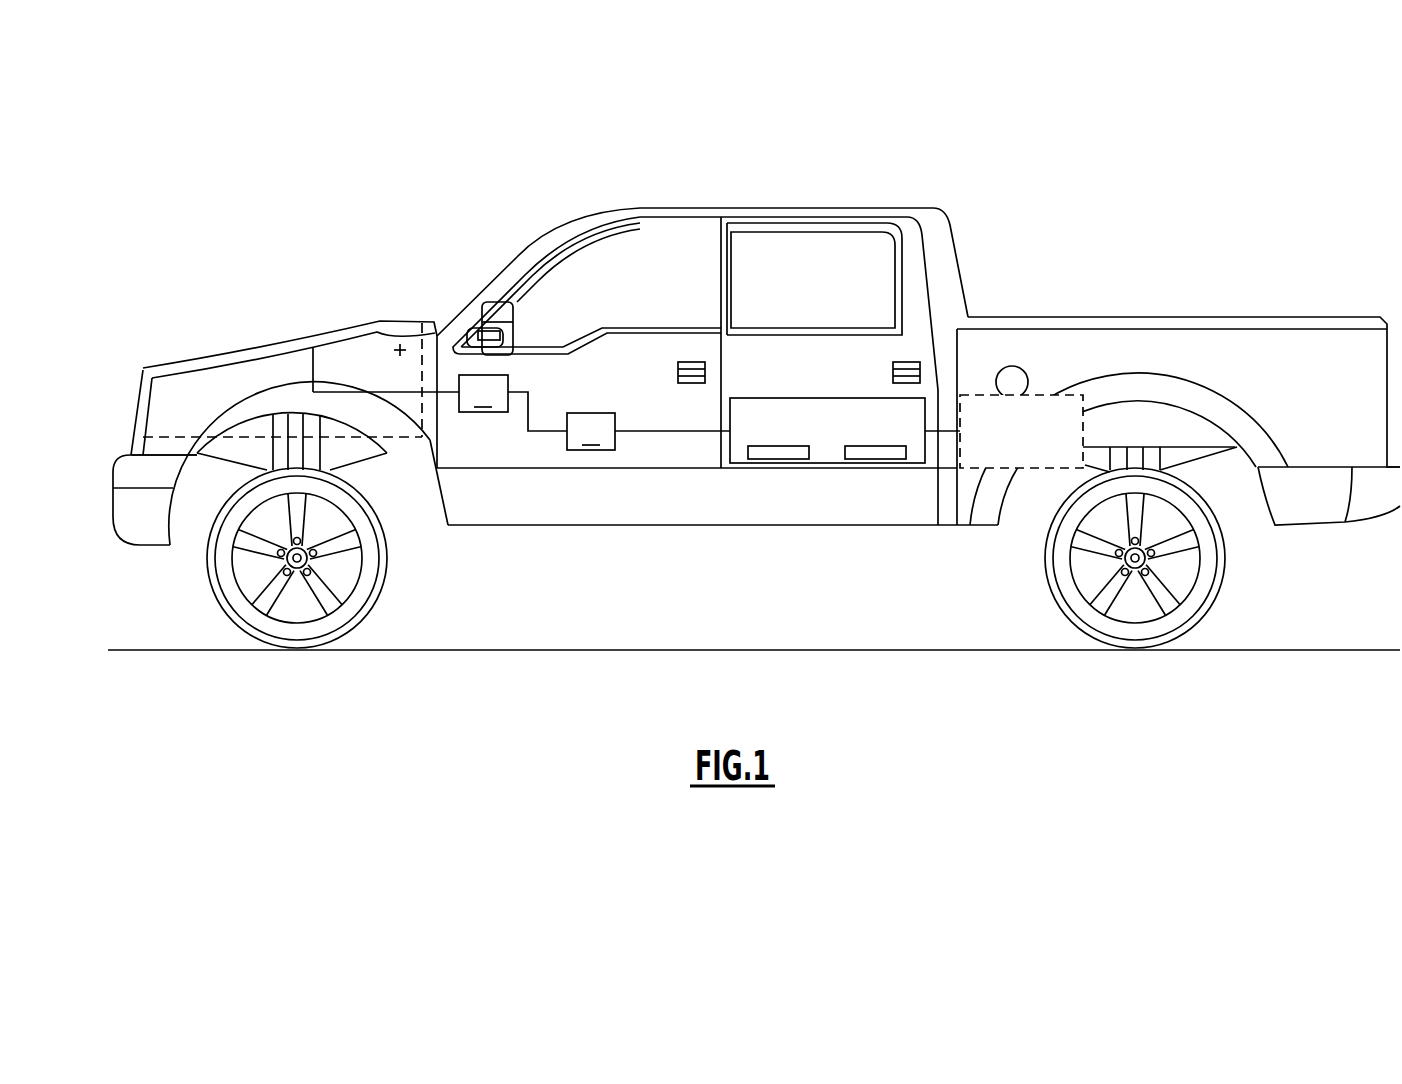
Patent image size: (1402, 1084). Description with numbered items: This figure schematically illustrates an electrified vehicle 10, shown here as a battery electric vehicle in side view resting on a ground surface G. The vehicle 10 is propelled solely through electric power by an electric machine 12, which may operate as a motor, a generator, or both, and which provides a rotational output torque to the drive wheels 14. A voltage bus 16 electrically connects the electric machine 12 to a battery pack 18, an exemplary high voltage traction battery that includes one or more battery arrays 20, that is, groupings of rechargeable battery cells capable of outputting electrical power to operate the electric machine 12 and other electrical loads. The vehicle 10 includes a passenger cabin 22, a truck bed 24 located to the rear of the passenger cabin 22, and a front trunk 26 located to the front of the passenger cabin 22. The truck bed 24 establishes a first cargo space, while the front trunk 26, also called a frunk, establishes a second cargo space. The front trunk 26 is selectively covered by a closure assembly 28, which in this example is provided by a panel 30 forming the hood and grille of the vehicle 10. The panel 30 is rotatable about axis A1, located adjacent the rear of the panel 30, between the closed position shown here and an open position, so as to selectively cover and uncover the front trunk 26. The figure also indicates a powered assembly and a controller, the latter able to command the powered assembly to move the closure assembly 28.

The electrified vehicle 10 is at (772, 192).
The electric machine 12 is at (1030, 395).
The drive wheels 14 is at (284, 632).
The voltage bus 16 is at (947, 445).
The battery pack 18 is at (818, 398).
The battery arrays 20 is at (860, 452).
The passenger cabin 22 is at (623, 262).
The truck bed 24 is at (1153, 300).
The front trunk 26 is at (400, 383).
The closure assembly 28 is at (234, 306).
The panel 30 is at (309, 318).
The axis A1 is at (400, 352).
The ground surface G is at (487, 632).